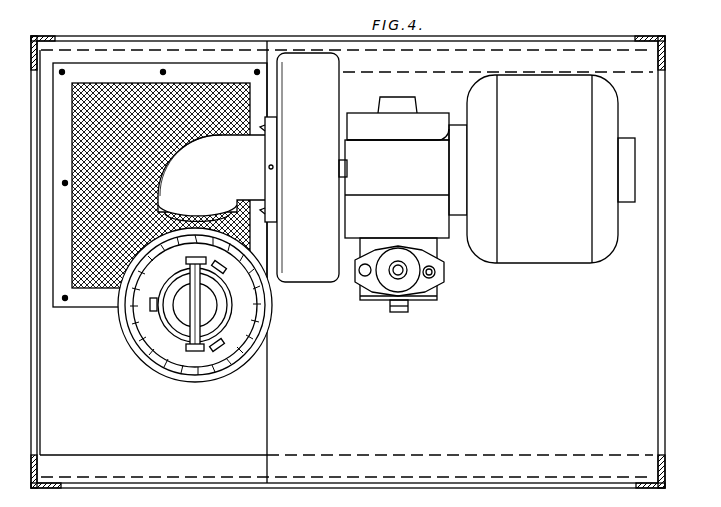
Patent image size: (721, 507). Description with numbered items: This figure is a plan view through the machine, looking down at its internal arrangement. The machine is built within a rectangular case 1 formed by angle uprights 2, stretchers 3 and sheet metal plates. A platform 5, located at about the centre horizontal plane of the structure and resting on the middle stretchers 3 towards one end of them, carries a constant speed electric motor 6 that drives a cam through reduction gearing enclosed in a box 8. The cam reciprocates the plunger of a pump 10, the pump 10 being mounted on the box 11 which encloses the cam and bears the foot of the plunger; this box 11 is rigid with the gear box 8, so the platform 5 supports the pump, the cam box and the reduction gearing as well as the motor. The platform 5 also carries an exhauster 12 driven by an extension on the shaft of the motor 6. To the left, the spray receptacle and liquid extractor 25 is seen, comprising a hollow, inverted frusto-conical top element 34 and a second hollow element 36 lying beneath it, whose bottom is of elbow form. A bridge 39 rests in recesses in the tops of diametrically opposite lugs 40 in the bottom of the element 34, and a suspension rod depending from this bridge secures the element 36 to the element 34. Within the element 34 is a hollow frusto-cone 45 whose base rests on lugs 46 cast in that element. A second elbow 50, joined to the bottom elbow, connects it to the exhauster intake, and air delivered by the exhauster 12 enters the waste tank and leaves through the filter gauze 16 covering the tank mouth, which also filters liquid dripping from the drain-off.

The rectangular case 1 is at (548, 38).
The angle uprights 2 is at (660, 57).
The stretchers 3 is at (205, 46).
The platform 5 is at (631, 277).
The constant speed electric motor 6 is at (549, 248).
The gear box 8 is at (430, 230).
The pump 10 is at (410, 284).
The cam box 11 is at (372, 296).
The exhauster 12 is at (320, 60).
The filter gauze 16 is at (165, 178).
The spray receptacle and liquid extractor 25 is at (120, 320).
The top element 34 is at (158, 356).
The second hollow element 36 is at (128, 342).
The bridge 39 is at (190, 283).
The lugs 40 is at (186, 260).
The hollow frusto-cone 45 is at (222, 305).
The lugs 46 is at (226, 272).
The second elbow 50 is at (191, 165).